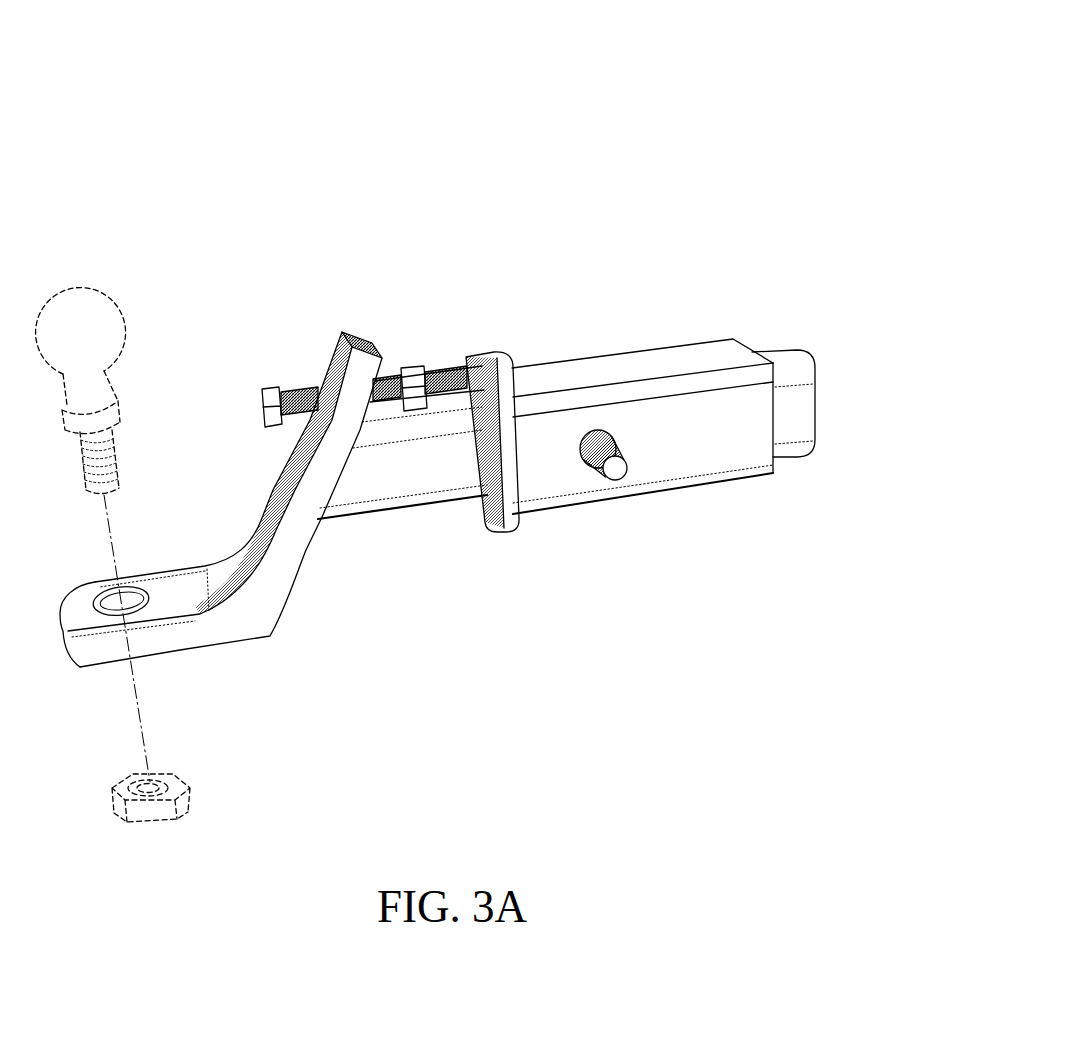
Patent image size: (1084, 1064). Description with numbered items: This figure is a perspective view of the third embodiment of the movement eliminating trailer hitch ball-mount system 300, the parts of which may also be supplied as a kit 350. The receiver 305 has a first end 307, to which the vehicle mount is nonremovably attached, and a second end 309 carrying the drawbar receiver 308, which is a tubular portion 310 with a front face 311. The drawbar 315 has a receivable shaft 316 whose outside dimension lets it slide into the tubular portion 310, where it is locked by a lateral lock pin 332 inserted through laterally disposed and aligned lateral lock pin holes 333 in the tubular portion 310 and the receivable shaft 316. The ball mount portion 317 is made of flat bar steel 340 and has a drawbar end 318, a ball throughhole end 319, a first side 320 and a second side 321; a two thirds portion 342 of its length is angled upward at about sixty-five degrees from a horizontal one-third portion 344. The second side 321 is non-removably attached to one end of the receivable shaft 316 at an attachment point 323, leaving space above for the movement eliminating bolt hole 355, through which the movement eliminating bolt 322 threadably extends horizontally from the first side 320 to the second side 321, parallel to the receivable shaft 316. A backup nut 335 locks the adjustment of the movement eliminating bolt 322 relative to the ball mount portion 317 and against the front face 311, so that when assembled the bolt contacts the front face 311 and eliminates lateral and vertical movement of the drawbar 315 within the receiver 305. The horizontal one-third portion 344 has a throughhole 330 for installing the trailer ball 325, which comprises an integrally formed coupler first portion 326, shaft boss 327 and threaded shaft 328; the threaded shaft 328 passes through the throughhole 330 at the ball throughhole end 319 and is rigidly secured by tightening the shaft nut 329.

The movement eliminating trailer hitch ball-mount system 300 is at (588, 98).
The receiver 305 is at (661, 297).
The first end 307 is at (745, 480).
The drawbar receiver 308 is at (515, 367).
The second end 309 is at (528, 513).
The tubular portion 310 is at (577, 493).
The front face 311 is at (482, 518).
The drawbar 315 is at (779, 356).
The receivable shaft 316 is at (792, 377).
The ball mount portion 317 is at (260, 517).
The drawbar end 318 is at (337, 358).
The ball throughhole end 319 is at (197, 636).
The first side 320 is at (277, 490).
The second side 321 is at (297, 573).
The movement eliminating bolt 322 is at (260, 408).
The attachment point 323 is at (348, 459).
The trailer ball 325 is at (88, 286).
The coupler first portion 326 is at (108, 323).
The shaft boss 327 is at (119, 404).
The threaded shaft 328 is at (86, 468).
The shaft nut 329 is at (182, 775).
The throughhole 330 is at (95, 598).
The lateral lock pin 332 is at (617, 472).
The lateral lock pin holes 333 is at (601, 432).
The backup nut 335 is at (410, 367).
The flat bar steel 340 is at (205, 636).
The two thirds portion 342 is at (308, 488).
The horizontal one-third portion 344 is at (118, 642).
The kit 350 is at (647, 127).
The movement eliminating bolt hole 355 is at (330, 388).